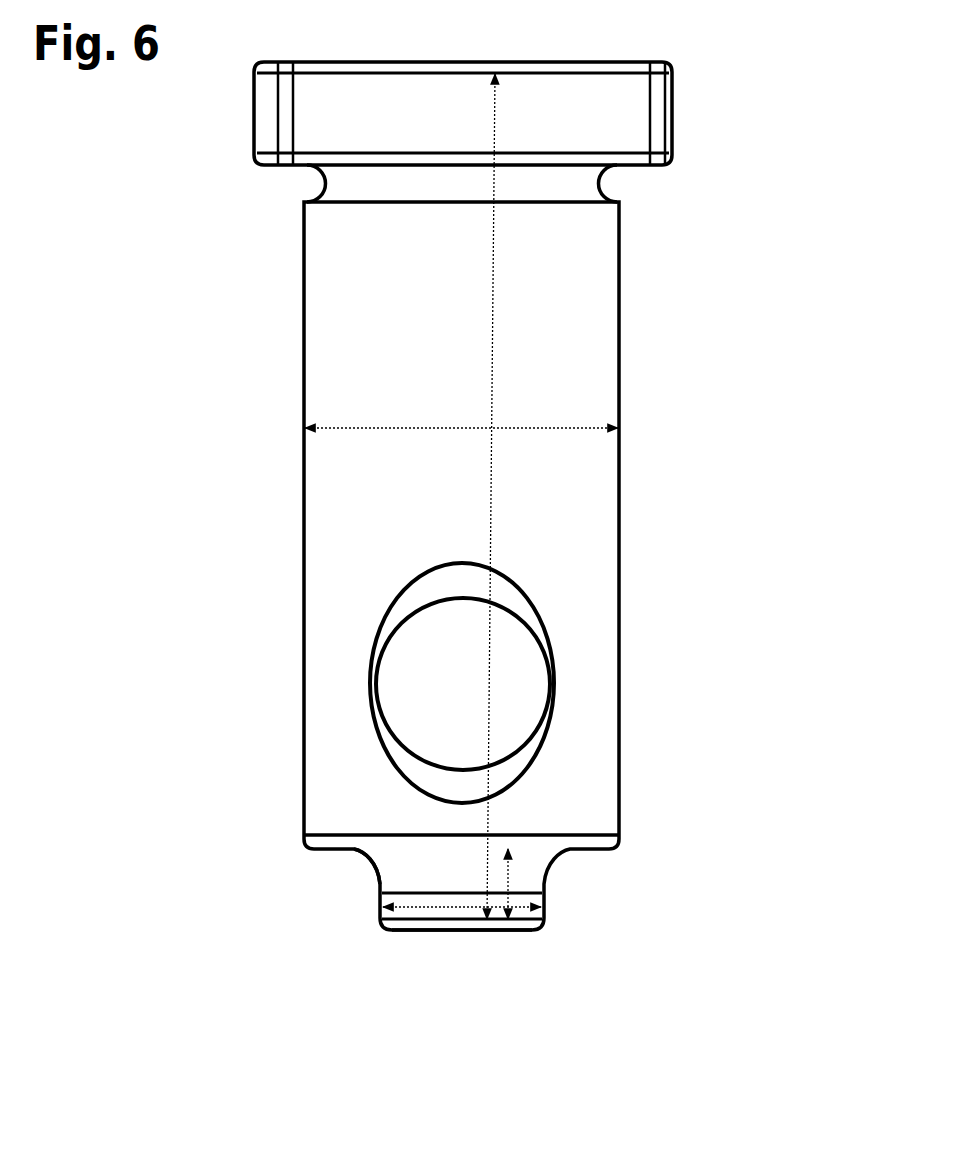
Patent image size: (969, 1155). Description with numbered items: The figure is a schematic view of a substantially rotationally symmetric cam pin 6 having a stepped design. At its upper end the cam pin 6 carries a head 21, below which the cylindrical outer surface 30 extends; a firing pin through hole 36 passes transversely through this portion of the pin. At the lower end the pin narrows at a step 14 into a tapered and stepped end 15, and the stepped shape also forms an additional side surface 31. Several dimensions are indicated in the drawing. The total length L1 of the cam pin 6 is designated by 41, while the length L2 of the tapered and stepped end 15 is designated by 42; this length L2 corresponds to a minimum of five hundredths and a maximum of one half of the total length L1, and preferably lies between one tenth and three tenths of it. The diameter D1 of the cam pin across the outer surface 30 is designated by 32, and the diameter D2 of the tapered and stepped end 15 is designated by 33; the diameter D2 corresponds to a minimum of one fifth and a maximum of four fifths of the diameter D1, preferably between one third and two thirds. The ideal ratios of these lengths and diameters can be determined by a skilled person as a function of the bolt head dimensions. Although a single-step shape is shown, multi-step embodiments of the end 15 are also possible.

The cam pin 6 is at (676, 339).
The head 21 is at (315, 112).
The outer surface 30 is at (620, 708).
The diameter D1 32 is at (378, 422).
The firing pin through hole 36 is at (440, 681).
The total length L1 41 is at (493, 523).
The step 14 is at (372, 869).
The end 15 is at (462, 933).
The additional side surface 31 is at (546, 895).
The diameter D2 33 is at (433, 908).
The length L2 42 is at (508, 868).